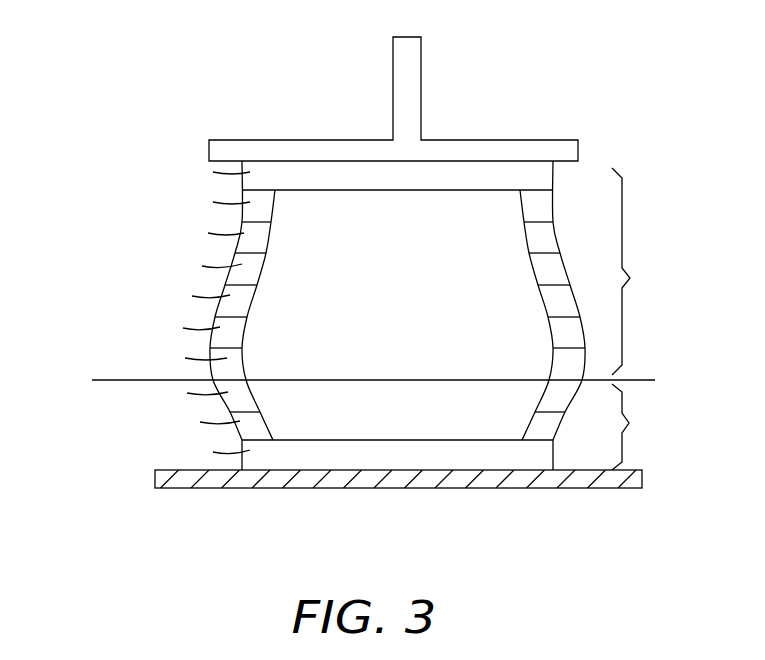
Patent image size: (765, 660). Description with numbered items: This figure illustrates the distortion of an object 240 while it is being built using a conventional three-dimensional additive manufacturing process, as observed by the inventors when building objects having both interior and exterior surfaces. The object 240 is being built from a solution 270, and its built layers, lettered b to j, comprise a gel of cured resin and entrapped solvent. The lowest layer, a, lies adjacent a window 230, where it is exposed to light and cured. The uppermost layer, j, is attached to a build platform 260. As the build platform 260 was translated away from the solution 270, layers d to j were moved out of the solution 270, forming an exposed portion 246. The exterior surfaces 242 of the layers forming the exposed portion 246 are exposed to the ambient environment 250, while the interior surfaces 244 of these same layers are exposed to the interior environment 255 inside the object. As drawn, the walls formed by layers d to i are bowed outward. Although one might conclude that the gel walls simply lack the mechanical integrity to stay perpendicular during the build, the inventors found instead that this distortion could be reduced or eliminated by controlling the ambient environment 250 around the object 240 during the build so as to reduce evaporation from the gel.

The window 230 is at (157, 478).
The object 240 is at (152, 168).
The exterior surfaces 242 is at (570, 270).
The interior surfaces 244 is at (543, 300).
The exposed portion 246 is at (642, 271).
The ambient environment 250 is at (108, 183).
The interior environment 255 is at (438, 249).
The build platform 260 is at (470, 150).
The solution 270 is at (642, 427).